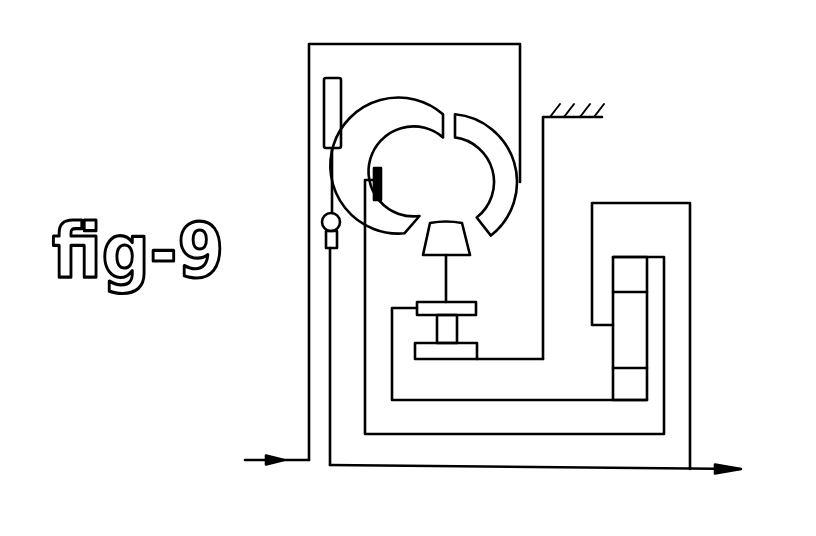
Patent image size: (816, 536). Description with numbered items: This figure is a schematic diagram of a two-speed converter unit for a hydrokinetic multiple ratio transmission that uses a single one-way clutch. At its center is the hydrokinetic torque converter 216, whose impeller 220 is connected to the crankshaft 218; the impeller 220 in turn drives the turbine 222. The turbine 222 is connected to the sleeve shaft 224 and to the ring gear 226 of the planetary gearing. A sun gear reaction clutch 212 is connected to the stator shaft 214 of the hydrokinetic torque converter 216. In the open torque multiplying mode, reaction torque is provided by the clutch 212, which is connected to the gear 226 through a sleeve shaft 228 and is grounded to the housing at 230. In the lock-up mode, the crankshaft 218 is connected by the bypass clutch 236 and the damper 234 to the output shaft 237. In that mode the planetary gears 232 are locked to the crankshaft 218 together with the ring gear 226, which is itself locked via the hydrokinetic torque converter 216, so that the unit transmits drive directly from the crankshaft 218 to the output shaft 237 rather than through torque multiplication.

The sun gear reaction clutch 212 is at (462, 305).
The stator shaft 214 is at (440, 242).
The hydrokinetic torque converter 216 is at (454, 188).
The crankshaft 218 is at (310, 447).
The impeller 220 is at (480, 138).
The turbine 222 is at (407, 138).
The sleeve shaft 224 is at (395, 433).
The ring gear 226 is at (637, 258).
The sleeve shaft 228 is at (399, 390).
The housing 230 is at (577, 104).
The planetary gears 232 is at (628, 332).
The damper 234 is at (322, 232).
The bypass clutch 236 is at (330, 125).
The output shaft 237 is at (698, 471).